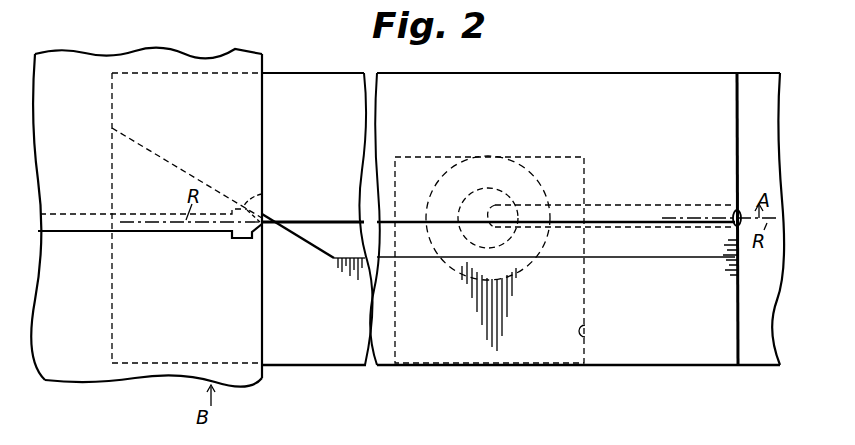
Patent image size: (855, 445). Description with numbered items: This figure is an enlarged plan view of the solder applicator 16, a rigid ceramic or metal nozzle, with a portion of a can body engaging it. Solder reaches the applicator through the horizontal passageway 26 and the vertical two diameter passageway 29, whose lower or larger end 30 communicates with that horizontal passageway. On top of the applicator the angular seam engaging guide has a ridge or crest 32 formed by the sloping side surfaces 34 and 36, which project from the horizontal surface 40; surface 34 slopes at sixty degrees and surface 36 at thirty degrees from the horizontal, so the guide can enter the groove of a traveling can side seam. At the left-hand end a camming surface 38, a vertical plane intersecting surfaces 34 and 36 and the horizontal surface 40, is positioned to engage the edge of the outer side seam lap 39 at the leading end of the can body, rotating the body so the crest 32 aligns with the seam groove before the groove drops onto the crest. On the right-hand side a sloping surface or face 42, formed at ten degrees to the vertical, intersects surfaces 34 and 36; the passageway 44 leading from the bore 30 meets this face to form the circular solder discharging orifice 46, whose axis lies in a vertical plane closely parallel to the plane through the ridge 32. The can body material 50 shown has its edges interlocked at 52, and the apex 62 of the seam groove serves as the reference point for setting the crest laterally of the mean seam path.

The solder applicator 16 is at (385, 367).
The horizontal passageway 26 is at (587, 333).
The vertical two diameter passageway 29 is at (512, 197).
The lower or larger end 30 is at (524, 165).
The ridge or crest 32 is at (334, 221).
The sloping side surface 34 is at (532, 255).
The sloping side surface 36 is at (521, 123).
The camming surface 38 is at (259, 222).
The outer side seam lap 39 is at (262, 191).
The horizontal surface 40 is at (521, 318).
The sloping surface or face 42 is at (760, 219).
The passageway 44 is at (599, 204).
The solder discharging orifice 46 is at (739, 211).
The can body material 50 is at (262, 55).
The interlocked portion 52 is at (118, 233).
The apex 62 is at (150, 213).